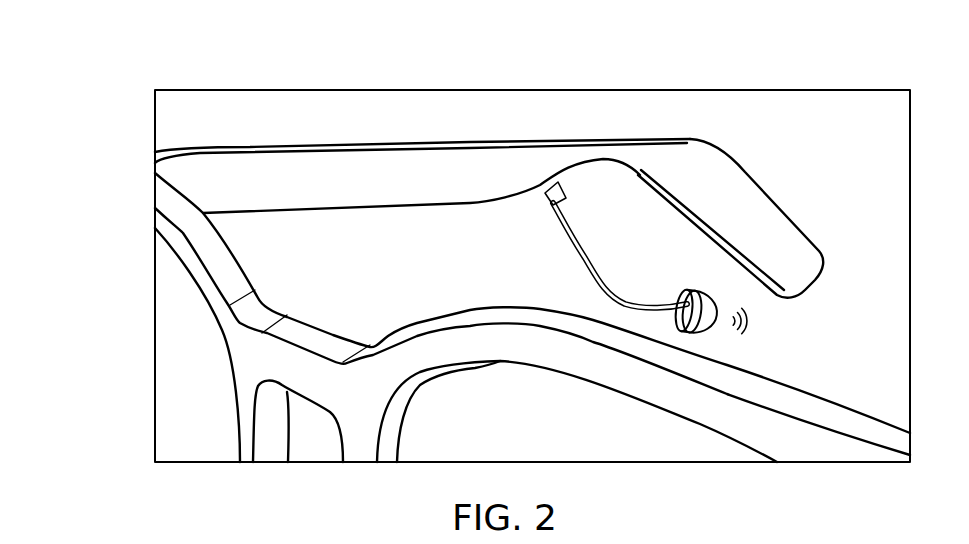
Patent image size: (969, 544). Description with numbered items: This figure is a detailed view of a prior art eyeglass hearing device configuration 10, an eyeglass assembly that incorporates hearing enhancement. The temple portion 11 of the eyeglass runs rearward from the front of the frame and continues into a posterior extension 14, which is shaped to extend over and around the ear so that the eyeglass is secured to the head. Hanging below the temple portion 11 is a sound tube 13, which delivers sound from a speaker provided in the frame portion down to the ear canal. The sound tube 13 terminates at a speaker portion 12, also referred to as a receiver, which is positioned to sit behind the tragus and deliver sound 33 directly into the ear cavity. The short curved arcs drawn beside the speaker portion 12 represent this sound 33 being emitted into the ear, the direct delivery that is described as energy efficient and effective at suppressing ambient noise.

The eyeglass hearing device configuration 10 is at (190, 195).
The temple portion 11 is at (295, 147).
The speaker portion 12 is at (702, 294).
The sound tube 13 is at (572, 243).
The posterior extension 14 is at (738, 167).
The sound 33 is at (750, 322).